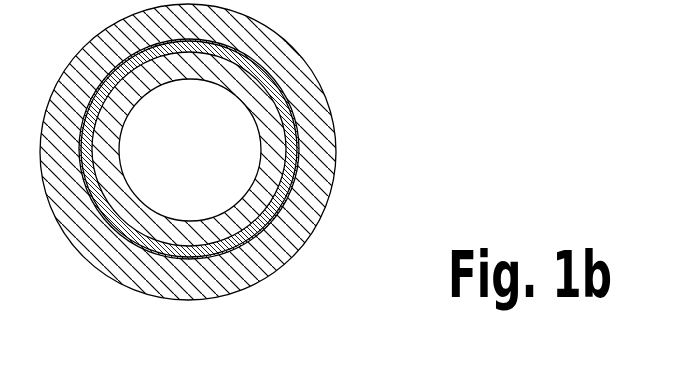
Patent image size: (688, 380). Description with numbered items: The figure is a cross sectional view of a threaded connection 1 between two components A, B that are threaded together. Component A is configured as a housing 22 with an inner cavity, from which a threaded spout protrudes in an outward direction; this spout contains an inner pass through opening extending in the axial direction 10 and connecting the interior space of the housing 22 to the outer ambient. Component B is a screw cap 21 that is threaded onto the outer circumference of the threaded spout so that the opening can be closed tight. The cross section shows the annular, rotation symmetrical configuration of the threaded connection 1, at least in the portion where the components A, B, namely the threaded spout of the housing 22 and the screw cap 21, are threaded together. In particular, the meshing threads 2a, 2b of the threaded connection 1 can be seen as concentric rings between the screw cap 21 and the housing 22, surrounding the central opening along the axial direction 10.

The threaded connection 1 is at (290, 104).
The housing 22 is at (325, 166).
The screw cap 21 is at (132, 222).
The thread 2a is at (219, 61).
The thread 2b is at (256, 55).
The axial direction 10 is at (189, 148).
The component A is at (264, 185).
The component B is at (299, 213).